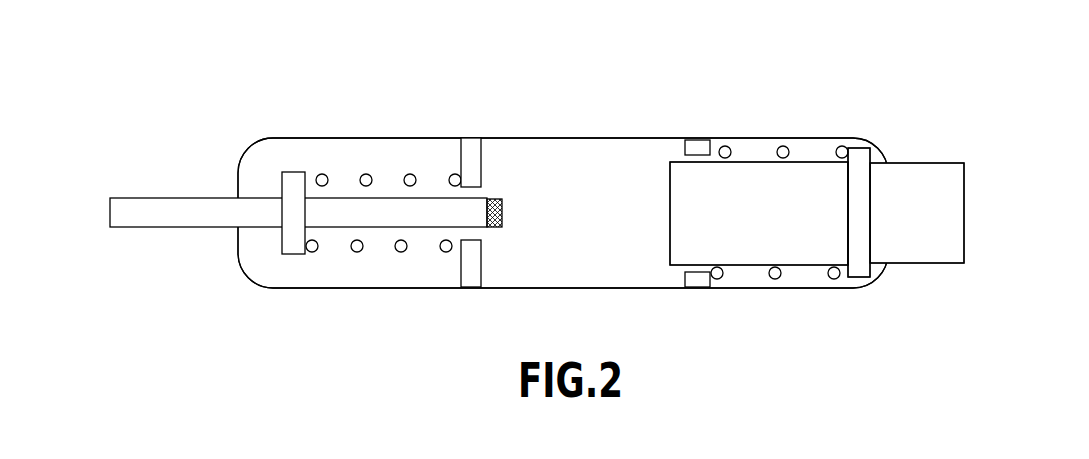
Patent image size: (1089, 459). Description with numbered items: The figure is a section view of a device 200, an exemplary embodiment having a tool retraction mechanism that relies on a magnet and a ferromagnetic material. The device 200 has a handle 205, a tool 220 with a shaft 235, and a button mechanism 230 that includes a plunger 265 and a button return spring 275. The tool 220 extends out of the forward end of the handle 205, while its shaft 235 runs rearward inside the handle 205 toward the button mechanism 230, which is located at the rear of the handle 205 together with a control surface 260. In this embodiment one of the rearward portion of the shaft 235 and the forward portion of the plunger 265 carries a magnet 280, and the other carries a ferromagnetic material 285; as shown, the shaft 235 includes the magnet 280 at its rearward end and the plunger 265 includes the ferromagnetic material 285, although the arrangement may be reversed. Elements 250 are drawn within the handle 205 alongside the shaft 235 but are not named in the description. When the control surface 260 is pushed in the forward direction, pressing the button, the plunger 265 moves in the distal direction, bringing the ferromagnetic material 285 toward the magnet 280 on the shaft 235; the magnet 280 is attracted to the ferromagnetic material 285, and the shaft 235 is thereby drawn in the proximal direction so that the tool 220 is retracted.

The device 200 is at (832, 70).
The handle 205 is at (528, 288).
The tool 220 is at (153, 228).
The button mechanism 230 is at (953, 317).
The shaft 235 is at (340, 228).
The bearings 250 is at (358, 162).
The control surface 260 is at (964, 212).
The plunger 265 is at (783, 226).
The button return spring 275 is at (787, 142).
The magnet 280 is at (497, 197).
The ferromagnetic material 285 is at (670, 200).